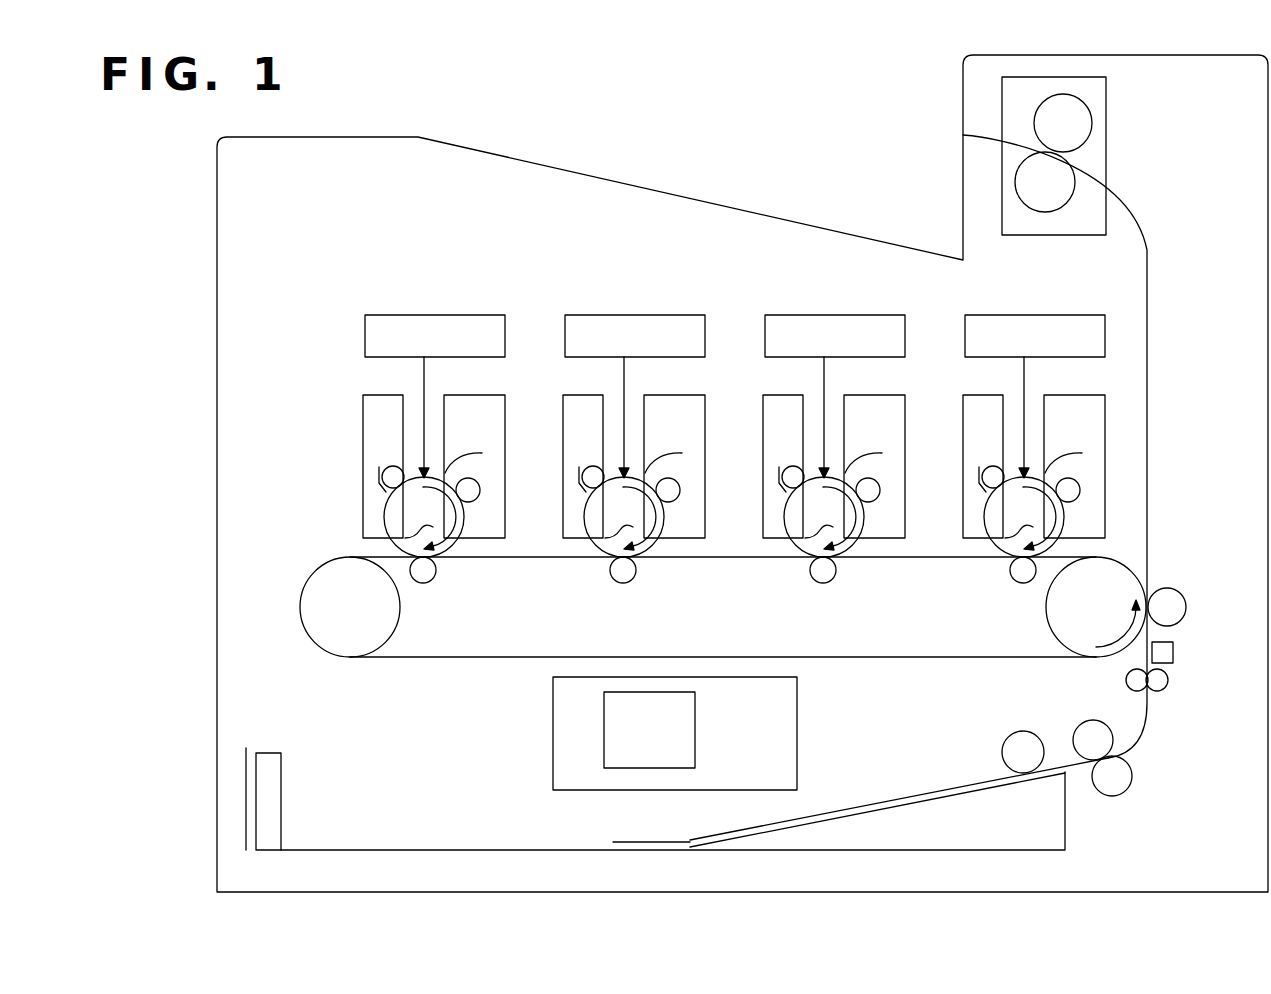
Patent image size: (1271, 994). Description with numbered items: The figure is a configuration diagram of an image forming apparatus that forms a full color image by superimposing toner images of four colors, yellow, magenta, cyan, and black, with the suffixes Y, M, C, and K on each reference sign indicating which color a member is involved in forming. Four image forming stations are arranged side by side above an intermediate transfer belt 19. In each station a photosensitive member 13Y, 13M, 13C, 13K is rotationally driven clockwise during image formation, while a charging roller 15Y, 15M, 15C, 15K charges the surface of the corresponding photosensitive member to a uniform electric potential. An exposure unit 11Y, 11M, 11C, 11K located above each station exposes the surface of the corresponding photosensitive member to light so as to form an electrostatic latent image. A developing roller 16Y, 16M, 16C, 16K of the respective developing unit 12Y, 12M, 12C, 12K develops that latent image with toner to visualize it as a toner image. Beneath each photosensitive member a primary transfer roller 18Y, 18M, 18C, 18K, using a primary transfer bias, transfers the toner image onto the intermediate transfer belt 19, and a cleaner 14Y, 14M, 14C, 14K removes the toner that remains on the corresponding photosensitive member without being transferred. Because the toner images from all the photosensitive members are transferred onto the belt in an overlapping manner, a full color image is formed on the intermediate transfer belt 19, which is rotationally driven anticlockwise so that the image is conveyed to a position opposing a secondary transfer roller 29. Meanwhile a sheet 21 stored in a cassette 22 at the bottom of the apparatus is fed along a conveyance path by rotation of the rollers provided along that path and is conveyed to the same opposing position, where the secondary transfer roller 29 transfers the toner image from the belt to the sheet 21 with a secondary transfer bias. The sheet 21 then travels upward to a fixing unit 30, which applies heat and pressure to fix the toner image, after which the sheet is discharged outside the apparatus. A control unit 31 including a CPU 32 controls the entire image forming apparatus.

The exposure unit 11K is at (476, 314).
The exposure unit 11C is at (676, 314).
The exposure unit 11M is at (876, 314).
The exposure unit 11Y is at (1076, 314).
The developing unit 12K is at (463, 395).
The developing unit 12C is at (663, 395).
The developing unit 12M is at (863, 395).
The developing unit 12Y is at (1063, 395).
The photosensitive member 13K is at (384, 519).
The photosensitive member 13C is at (584, 517).
The photosensitive member 13M is at (784, 517).
The photosensitive member 13Y is at (984, 517).
The cleaner 14K is at (380, 477).
The cleaner 14C is at (578, 476).
The cleaner 14M is at (778, 476).
The cleaner 14Y is at (978, 476).
The charging roller 15K is at (395, 468).
The charging roller 15C is at (595, 468).
The charging roller 15M is at (795, 468).
The charging roller 15Y is at (995, 468).
The developing roller 16K is at (473, 478).
The developing roller 16C is at (673, 478).
The developing roller 16M is at (873, 478).
The developing roller 16Y is at (1073, 478).
The primary transfer roller 18K is at (423, 583).
The primary transfer roller 18C is at (623, 583).
The primary transfer roller 18M is at (823, 583).
The primary transfer roller 18Y is at (1023, 583).
The intermediate transfer belt 19 is at (435, 657).
The sheet 21 is at (846, 808).
The cassette 22 is at (1064, 832).
The secondary transfer roller 29 is at (1187, 607).
The fixing unit 30 is at (1106, 125).
The control unit 31 is at (552, 717).
The CPU 32 is at (695, 705).